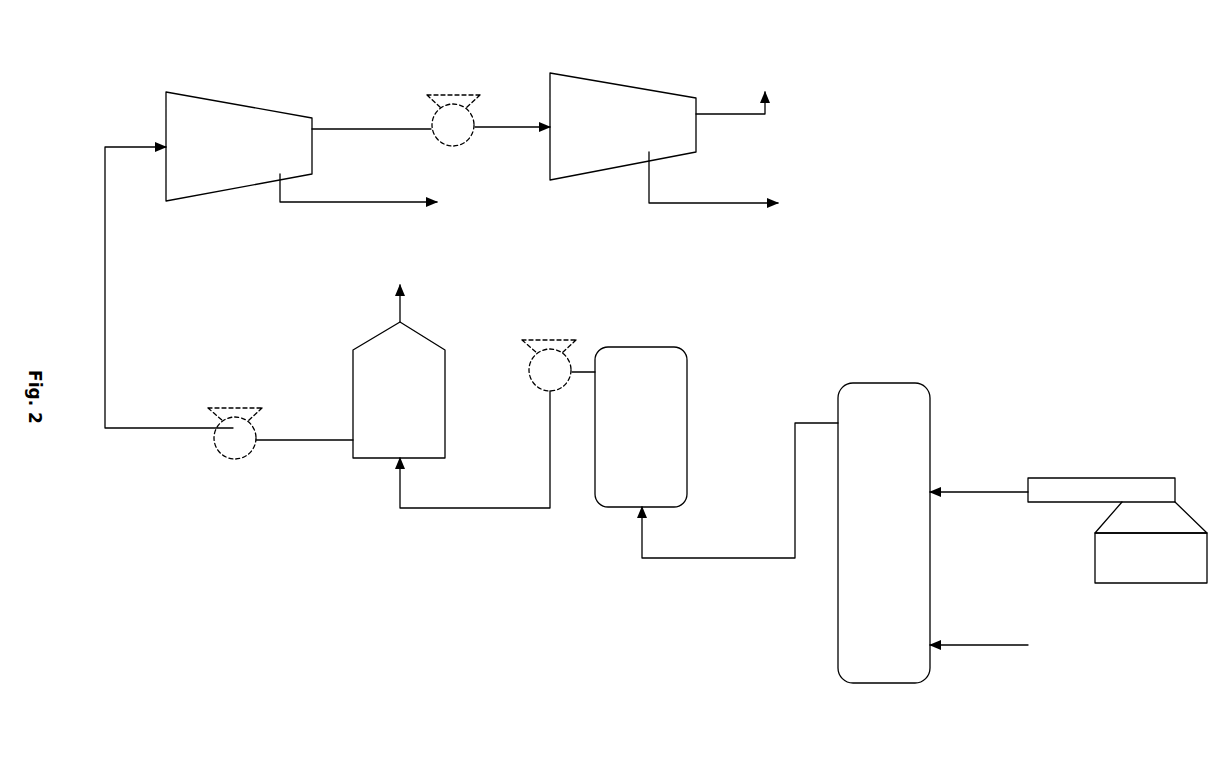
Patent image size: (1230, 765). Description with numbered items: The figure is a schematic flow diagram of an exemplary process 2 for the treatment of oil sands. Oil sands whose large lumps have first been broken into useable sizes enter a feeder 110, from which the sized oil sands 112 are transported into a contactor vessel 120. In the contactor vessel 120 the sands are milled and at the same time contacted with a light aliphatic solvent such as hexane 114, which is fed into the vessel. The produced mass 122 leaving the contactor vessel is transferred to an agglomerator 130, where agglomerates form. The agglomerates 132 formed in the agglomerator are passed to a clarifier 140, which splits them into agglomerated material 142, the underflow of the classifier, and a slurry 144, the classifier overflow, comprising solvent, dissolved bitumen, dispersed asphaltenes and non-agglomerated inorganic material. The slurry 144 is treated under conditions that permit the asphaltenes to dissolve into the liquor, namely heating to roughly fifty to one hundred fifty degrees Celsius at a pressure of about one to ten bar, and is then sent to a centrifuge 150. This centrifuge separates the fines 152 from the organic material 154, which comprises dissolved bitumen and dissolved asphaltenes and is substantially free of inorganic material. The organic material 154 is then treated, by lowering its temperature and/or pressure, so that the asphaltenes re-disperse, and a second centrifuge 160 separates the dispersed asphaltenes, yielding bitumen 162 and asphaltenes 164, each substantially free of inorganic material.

The process 2 is at (243, 628).
The feeder 110 is at (1167, 585).
The sized oil sands 112 is at (979, 503).
The light aliphatic solvent 114 is at (979, 658).
The contactor vessel 120 is at (878, 683).
The produced mass 122 is at (740, 500).
The agglomerator 130 is at (687, 390).
The agglomerates 132 is at (497, 435).
The clarifier 140 is at (442, 405).
The agglomerated material 142 is at (420, 303).
The slurry 144 is at (280, 434).
The centrifuge 150 is at (238, 100).
The fines 152 is at (358, 198).
The organic material 154 is at (431, 122).
The centrifuge 160 is at (576, 75).
The bitumen 162 is at (713, 188).
The asphaltenes 164 is at (738, 89).